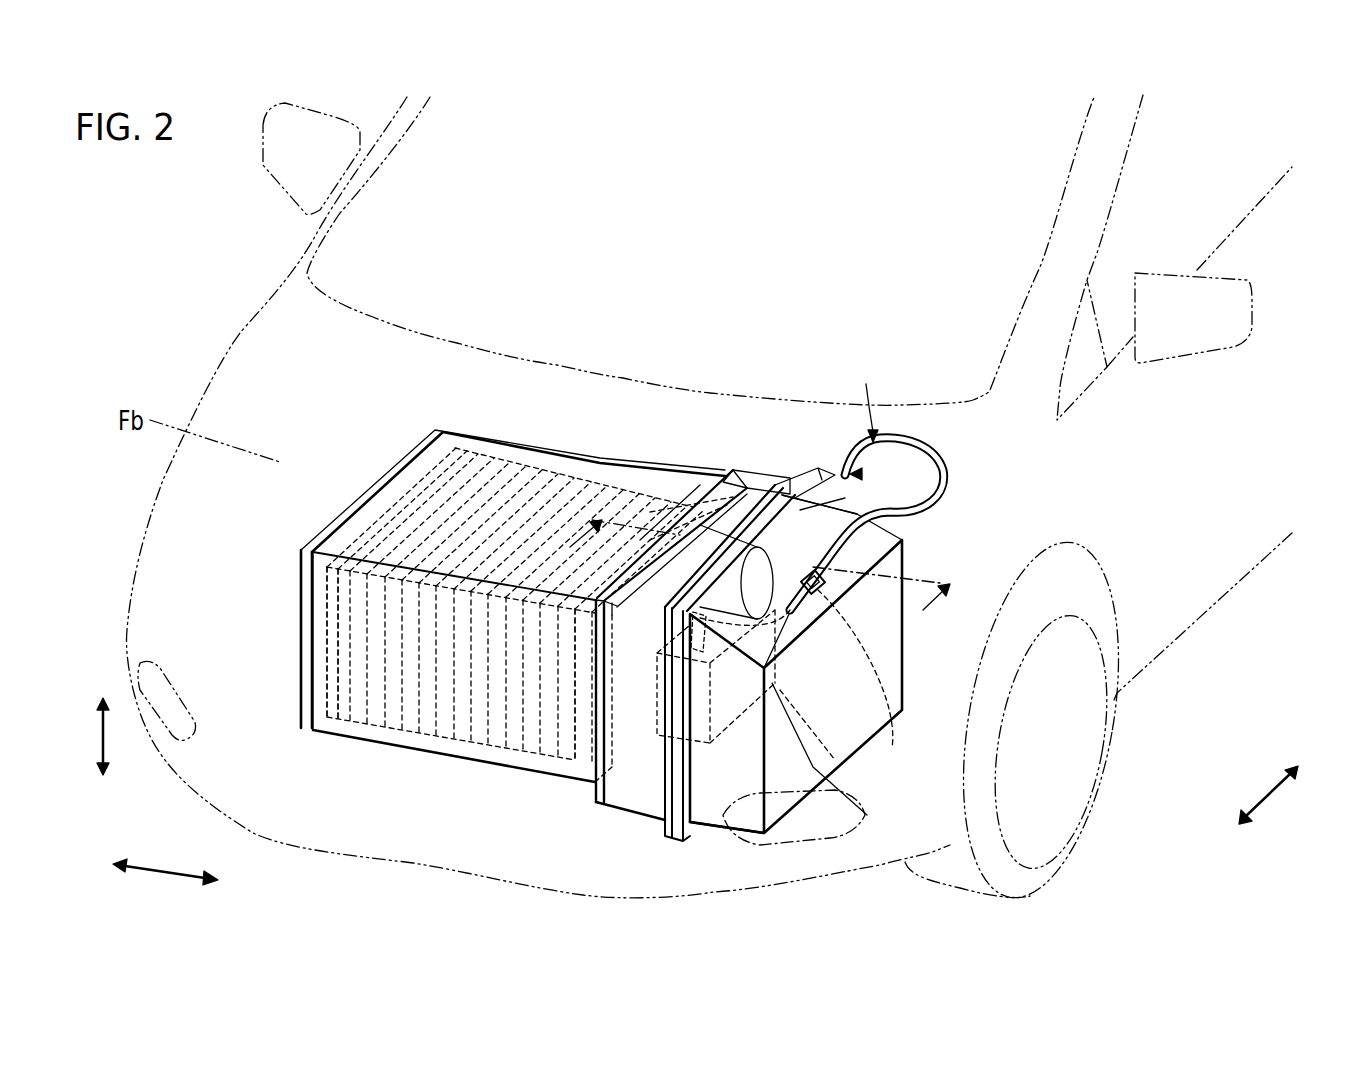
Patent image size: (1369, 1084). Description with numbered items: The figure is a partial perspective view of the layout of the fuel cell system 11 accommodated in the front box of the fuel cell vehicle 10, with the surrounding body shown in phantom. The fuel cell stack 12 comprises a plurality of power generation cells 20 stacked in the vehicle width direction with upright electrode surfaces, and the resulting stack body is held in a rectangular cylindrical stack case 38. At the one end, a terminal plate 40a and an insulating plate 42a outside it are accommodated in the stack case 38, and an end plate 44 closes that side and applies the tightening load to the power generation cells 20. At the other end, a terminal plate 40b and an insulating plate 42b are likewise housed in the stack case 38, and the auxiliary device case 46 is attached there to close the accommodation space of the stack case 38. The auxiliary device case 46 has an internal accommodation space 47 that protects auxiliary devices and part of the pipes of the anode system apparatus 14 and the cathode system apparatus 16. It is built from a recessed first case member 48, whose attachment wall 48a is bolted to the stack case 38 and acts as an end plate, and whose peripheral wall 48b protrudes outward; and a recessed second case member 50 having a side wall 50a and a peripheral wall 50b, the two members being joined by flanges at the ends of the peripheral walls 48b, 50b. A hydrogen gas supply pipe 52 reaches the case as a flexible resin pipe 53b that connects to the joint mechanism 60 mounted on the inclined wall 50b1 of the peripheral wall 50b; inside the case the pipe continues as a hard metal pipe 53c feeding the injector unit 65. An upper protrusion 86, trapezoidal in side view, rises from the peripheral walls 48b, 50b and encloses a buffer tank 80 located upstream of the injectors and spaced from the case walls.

The fuel cell vehicle 10 is at (243, 288).
The fuel cell system 11 is at (385, 447).
The fuel cell stack 12 is at (473, 649).
The anode system apparatus 14 is at (655, 782).
The cathode system apparatus 16 is at (711, 805).
The power generation cells 20 is at (445, 730).
The stack case 38 is at (501, 444).
The terminal plate 40a is at (343, 645).
The terminal plate 40b is at (590, 750).
The insulating plate 42a is at (332, 625).
The insulating plate 42b is at (620, 757).
The end plate 44 is at (305, 578).
The auxiliary device case 46 is at (830, 362).
The first case member 48 is at (693, 482).
The attachment wall 48a is at (723, 470).
The peripheral wall 48b is at (608, 800).
The second case member 50 is at (735, 614).
The side wall 50a is at (781, 697).
The peripheral wall 50b is at (750, 813).
The inclined wall 50b1 is at (882, 535).
The hydrogen gas supply pipe 52 is at (965, 464).
The resin pipe 53b is at (913, 443).
The hard metal pipe 53c is at (888, 742).
The joint mechanism 60 is at (880, 655).
The injector unit 65 is at (813, 765).
The buffer tank 80 is at (772, 553).
The upper protrusion 86 is at (695, 525).
The accommodation space 47 is at (813, 767).